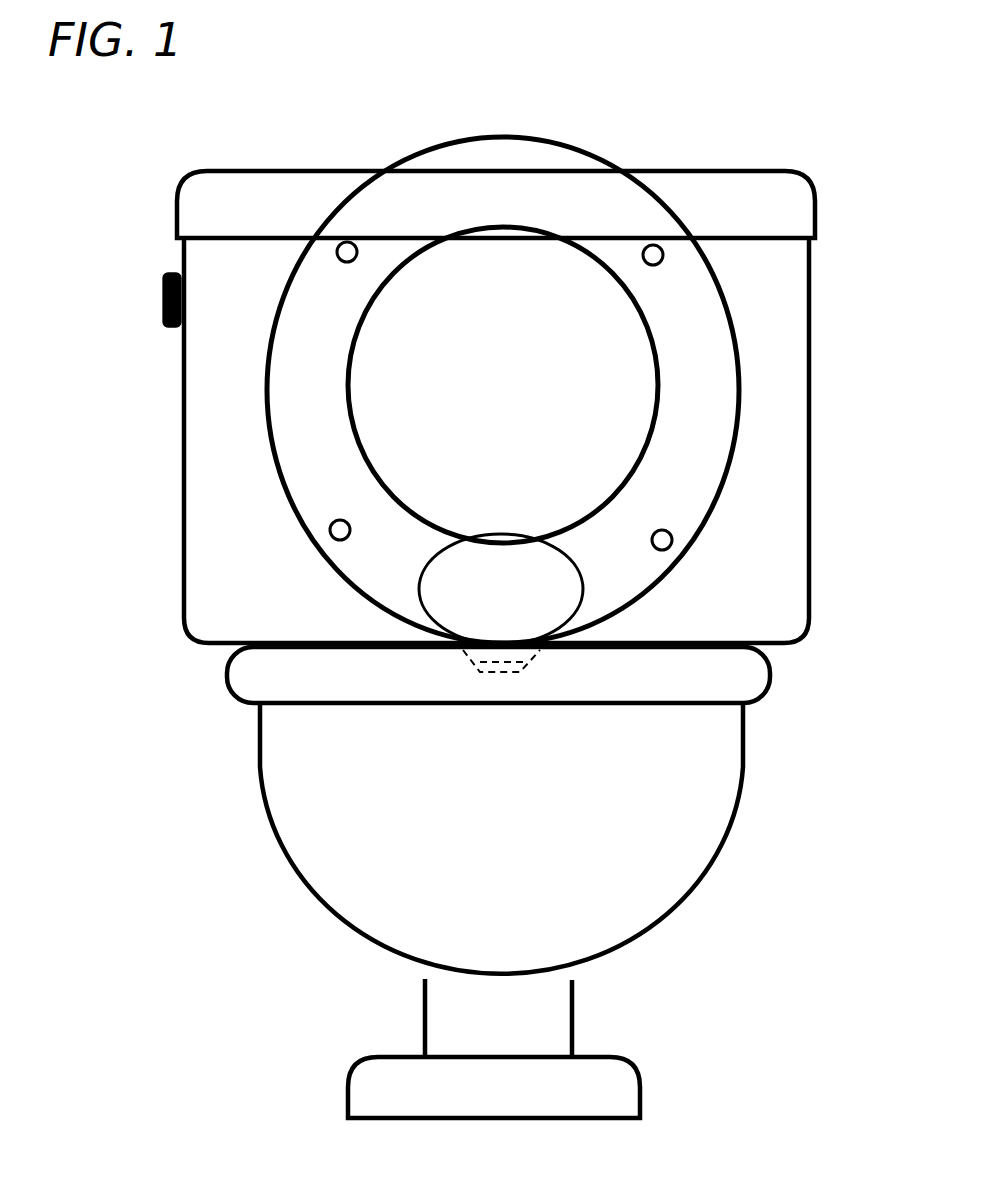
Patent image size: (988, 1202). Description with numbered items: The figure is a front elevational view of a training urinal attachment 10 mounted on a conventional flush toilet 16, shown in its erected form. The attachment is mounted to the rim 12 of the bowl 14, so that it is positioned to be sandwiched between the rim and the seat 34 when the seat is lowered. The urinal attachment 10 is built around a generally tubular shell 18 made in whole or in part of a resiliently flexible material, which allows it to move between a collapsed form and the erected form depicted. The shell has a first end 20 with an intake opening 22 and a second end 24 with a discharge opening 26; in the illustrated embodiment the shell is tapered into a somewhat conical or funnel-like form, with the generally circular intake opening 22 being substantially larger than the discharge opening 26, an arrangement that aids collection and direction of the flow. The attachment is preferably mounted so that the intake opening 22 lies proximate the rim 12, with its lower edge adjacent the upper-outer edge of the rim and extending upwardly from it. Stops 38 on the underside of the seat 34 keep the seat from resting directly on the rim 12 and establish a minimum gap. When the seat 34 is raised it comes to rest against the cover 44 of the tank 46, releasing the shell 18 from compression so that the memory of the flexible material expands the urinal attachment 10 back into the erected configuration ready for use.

The training urinal attachment 10 is at (482, 447).
The rim 12 is at (225, 688).
The bowl 14 is at (730, 828).
The flush toilet 16 is at (133, 371).
The shell 18 is at (433, 638).
The first end 20 is at (530, 533).
The intake opening 22 is at (555, 598).
The second end 24 is at (530, 670).
The discharge opening 26 is at (492, 674).
The seat 34 is at (290, 518).
The stops 38 is at (645, 262).
The cover 44 is at (745, 173).
The tank 46 is at (812, 397).